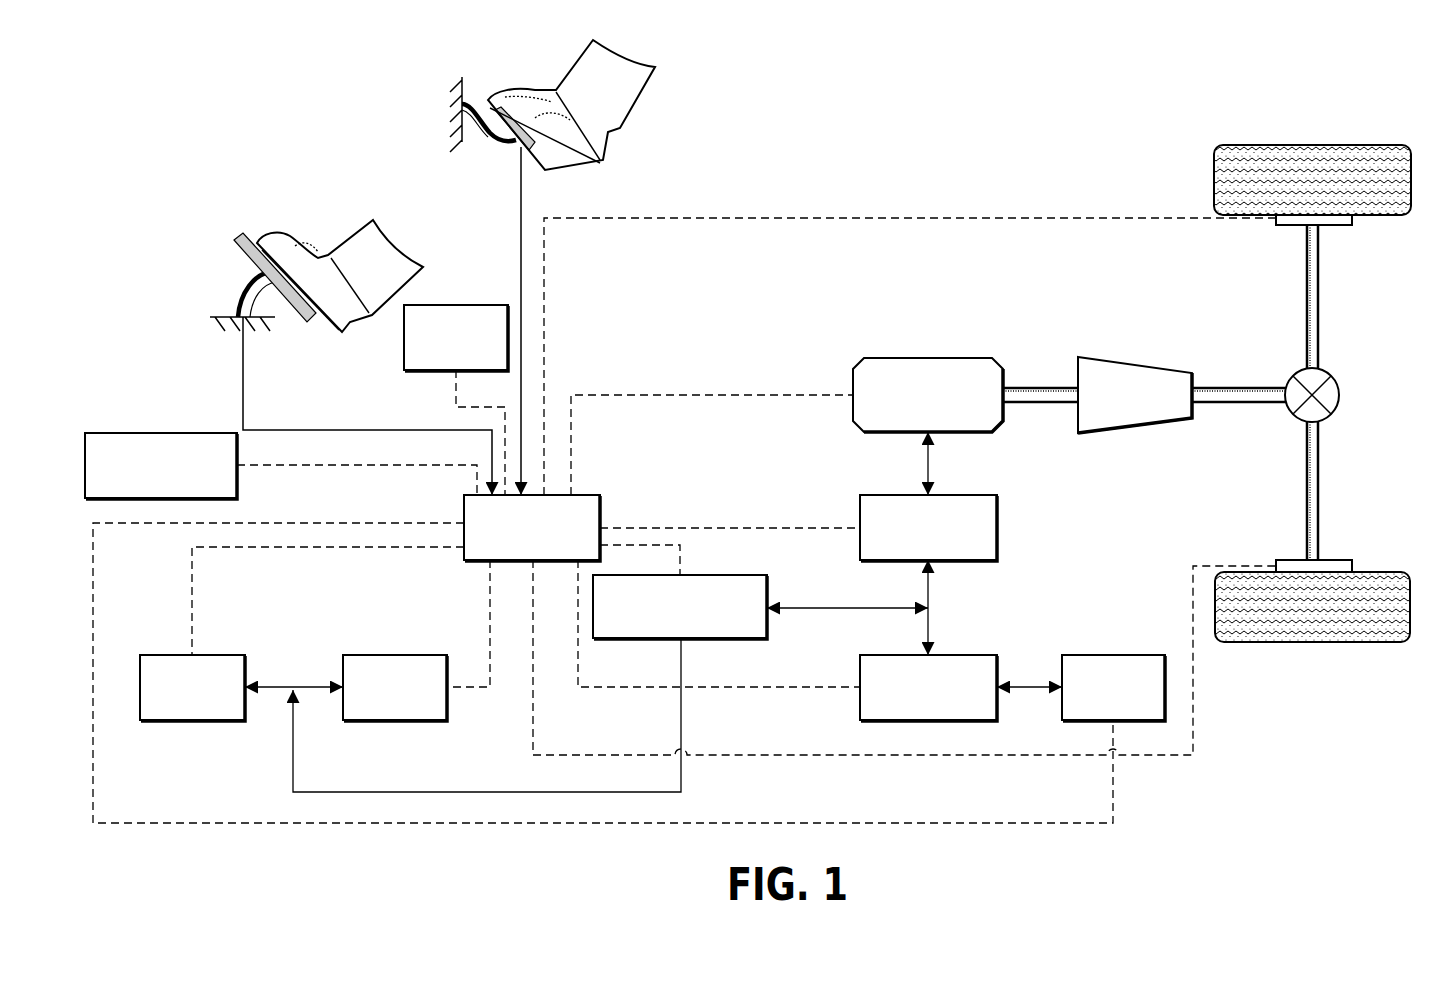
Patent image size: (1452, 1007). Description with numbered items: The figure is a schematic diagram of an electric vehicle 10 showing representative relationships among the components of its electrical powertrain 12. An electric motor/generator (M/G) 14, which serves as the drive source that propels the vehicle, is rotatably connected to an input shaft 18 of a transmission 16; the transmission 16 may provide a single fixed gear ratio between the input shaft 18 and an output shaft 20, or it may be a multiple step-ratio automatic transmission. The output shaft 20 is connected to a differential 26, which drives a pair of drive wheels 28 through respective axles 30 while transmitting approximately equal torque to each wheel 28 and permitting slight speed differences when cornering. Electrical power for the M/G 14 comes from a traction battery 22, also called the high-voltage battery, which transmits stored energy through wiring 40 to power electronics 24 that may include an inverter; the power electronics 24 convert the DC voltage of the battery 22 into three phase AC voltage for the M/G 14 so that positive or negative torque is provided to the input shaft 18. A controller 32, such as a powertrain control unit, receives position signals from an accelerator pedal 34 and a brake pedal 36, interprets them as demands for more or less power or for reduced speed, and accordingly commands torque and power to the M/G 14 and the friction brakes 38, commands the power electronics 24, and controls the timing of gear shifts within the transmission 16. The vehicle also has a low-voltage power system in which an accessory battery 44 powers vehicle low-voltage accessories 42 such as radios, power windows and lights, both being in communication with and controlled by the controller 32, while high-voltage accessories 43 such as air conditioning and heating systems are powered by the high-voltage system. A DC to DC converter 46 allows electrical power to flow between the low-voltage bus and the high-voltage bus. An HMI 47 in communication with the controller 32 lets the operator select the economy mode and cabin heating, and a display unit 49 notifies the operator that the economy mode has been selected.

The electric vehicle 10 is at (1128, 118).
The powertrain 12 is at (845, 338).
The electric motor/generator (M/G) 14 is at (926, 358).
The transmission 16 is at (1140, 432).
The input shaft 18 is at (1035, 388).
The output shaft 20 is at (1241, 388).
The traction battery 22 is at (860, 673).
The power electronics 24 is at (997, 530).
The differential 26 is at (1340, 393).
The drive wheels 28 is at (1314, 145).
The axles 30 is at (1320, 297).
The controller 32 is at (464, 511).
The accelerator pedal 34 is at (303, 212).
The brake pedal 36 is at (525, 55).
The friction brakes 38 is at (1355, 222).
The wiring 40 is at (928, 617).
The vehicle low-voltage accessories 42 is at (395, 655).
The high-voltage accessories 43 is at (1113, 655).
The accessory battery 44 is at (218, 655).
The DC to DC converter 46 is at (767, 588).
The human machine interface (HMI) 47 is at (457, 305).
The display unit 49 is at (160, 433).